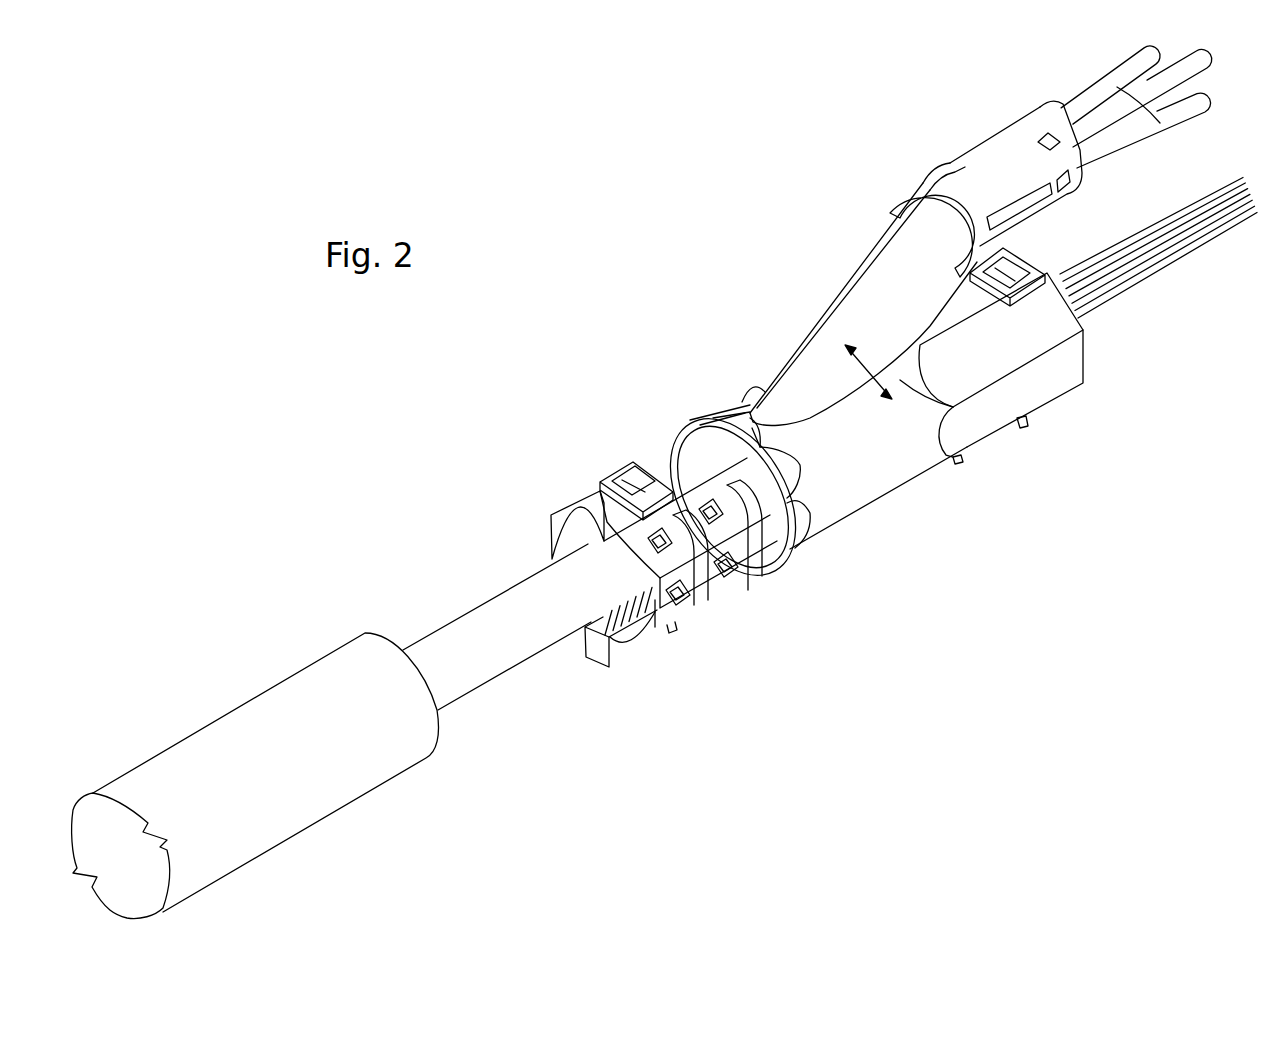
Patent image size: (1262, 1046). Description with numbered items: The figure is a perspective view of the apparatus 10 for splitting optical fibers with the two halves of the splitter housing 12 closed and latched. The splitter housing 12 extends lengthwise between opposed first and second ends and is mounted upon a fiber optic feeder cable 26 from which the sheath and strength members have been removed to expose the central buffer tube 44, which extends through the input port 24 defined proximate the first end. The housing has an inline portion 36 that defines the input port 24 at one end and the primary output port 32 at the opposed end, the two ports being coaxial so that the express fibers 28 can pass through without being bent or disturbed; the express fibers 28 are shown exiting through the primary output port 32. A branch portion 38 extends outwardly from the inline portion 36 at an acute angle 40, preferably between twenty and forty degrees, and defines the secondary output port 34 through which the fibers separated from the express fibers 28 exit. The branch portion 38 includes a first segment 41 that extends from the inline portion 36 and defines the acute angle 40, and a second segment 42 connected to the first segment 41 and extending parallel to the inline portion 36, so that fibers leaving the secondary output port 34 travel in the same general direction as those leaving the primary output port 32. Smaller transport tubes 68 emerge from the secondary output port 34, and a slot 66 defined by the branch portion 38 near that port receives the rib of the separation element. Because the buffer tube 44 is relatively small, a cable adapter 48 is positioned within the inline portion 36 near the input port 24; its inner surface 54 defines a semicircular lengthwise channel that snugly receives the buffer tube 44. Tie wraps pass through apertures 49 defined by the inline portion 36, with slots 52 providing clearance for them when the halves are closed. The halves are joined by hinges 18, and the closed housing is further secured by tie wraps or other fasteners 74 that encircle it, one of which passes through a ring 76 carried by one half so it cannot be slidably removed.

The apparatus for splitting optical fibers 10 is at (748, 350).
The splitter housing 12 is at (1050, 290).
The hinge 18 is at (1027, 425).
The input port 24 is at (571, 647).
The fiber optic feeder cable 26 is at (245, 837).
The express fibers 28 is at (1147, 270).
The primary output port 32 is at (1090, 349).
The secondary output port 34 is at (1063, 92).
The inline portion 36 is at (877, 473).
The branch portion 38 is at (921, 177).
The acute angle 40 is at (972, 448).
The first segment 41 is at (840, 300).
The second segment 42 is at (967, 155).
The central buffer tube 44 is at (447, 648).
The cable adapter 48 is at (578, 527).
The apertures 49 is at (692, 589).
The slots 52 is at (680, 482).
The inner surface 54 is at (1040, 137).
The slot 66 is at (1017, 207).
The transport tubes 68 is at (1157, 120).
The tie wraps or other fasteners 74 is at (785, 562).
The ring 76 is at (980, 248).